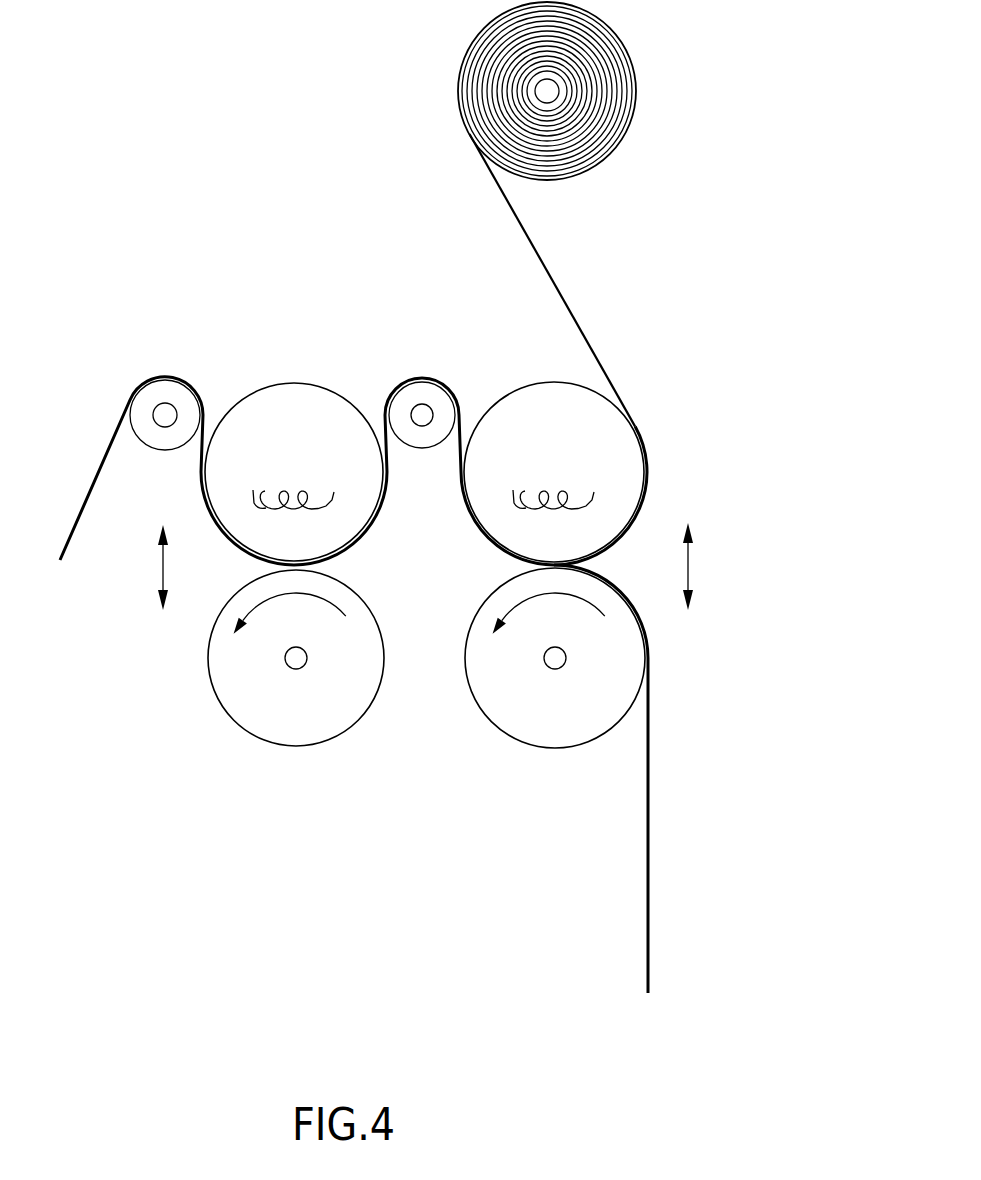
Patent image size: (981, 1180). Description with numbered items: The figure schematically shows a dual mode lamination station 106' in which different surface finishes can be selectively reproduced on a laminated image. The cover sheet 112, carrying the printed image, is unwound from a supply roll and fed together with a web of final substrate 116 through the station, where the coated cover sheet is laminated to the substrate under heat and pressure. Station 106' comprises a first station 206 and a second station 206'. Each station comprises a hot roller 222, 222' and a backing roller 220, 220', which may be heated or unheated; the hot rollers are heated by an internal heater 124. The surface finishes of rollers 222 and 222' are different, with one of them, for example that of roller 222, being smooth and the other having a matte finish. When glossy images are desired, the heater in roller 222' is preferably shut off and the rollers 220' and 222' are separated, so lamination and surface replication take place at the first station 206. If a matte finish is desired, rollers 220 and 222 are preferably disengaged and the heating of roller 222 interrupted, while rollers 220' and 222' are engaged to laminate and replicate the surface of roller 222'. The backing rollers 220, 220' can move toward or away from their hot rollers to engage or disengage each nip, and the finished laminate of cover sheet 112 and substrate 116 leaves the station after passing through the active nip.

The dual mode lamination station 106' is at (439, 497).
The cover sheet 112 is at (565, 300).
The final substrate 116 is at (650, 826).
The internal heater 124 is at (292, 488).
The first station 206 is at (750, 513).
The second station 206' is at (125, 645).
The backing roller 220 is at (555, 696).
The backing roller 220' is at (296, 698).
The hot roller 222 is at (554, 430).
The hot roller 222' is at (269, 437).